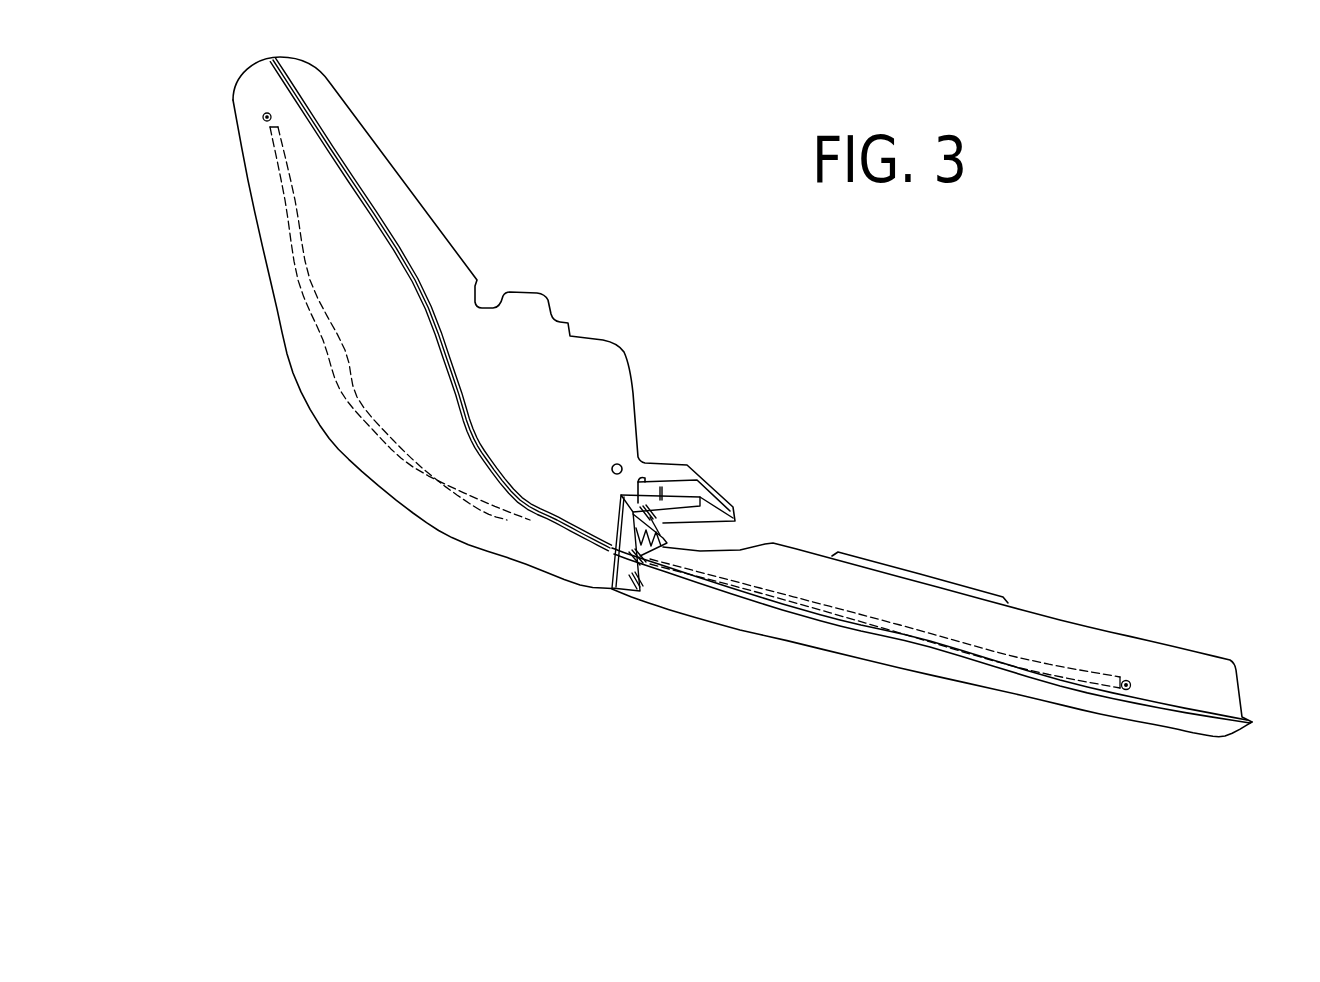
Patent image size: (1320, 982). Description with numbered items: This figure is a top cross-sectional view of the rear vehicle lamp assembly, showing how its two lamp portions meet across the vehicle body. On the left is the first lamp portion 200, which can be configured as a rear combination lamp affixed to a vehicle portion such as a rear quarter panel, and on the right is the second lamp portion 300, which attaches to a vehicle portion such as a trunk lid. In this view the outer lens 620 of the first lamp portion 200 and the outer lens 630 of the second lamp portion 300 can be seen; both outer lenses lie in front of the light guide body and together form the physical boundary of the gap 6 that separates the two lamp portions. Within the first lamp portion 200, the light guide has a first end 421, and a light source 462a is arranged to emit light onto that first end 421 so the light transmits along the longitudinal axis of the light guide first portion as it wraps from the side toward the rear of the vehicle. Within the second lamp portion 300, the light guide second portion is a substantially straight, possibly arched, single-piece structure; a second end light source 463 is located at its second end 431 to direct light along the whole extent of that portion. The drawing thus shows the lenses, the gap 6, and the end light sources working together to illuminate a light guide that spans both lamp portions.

The first lamp portion 200 is at (400, 197).
The first end 421 is at (287, 173).
The outer lens 620 is at (280, 318).
The outer lens 630 is at (887, 667).
The second lamp portion 300 is at (1108, 641).
The second end 431 is at (1103, 700).
The light source 462a is at (263, 117).
The second end light source 463 is at (1130, 690).
The gap 6 is at (610, 593).